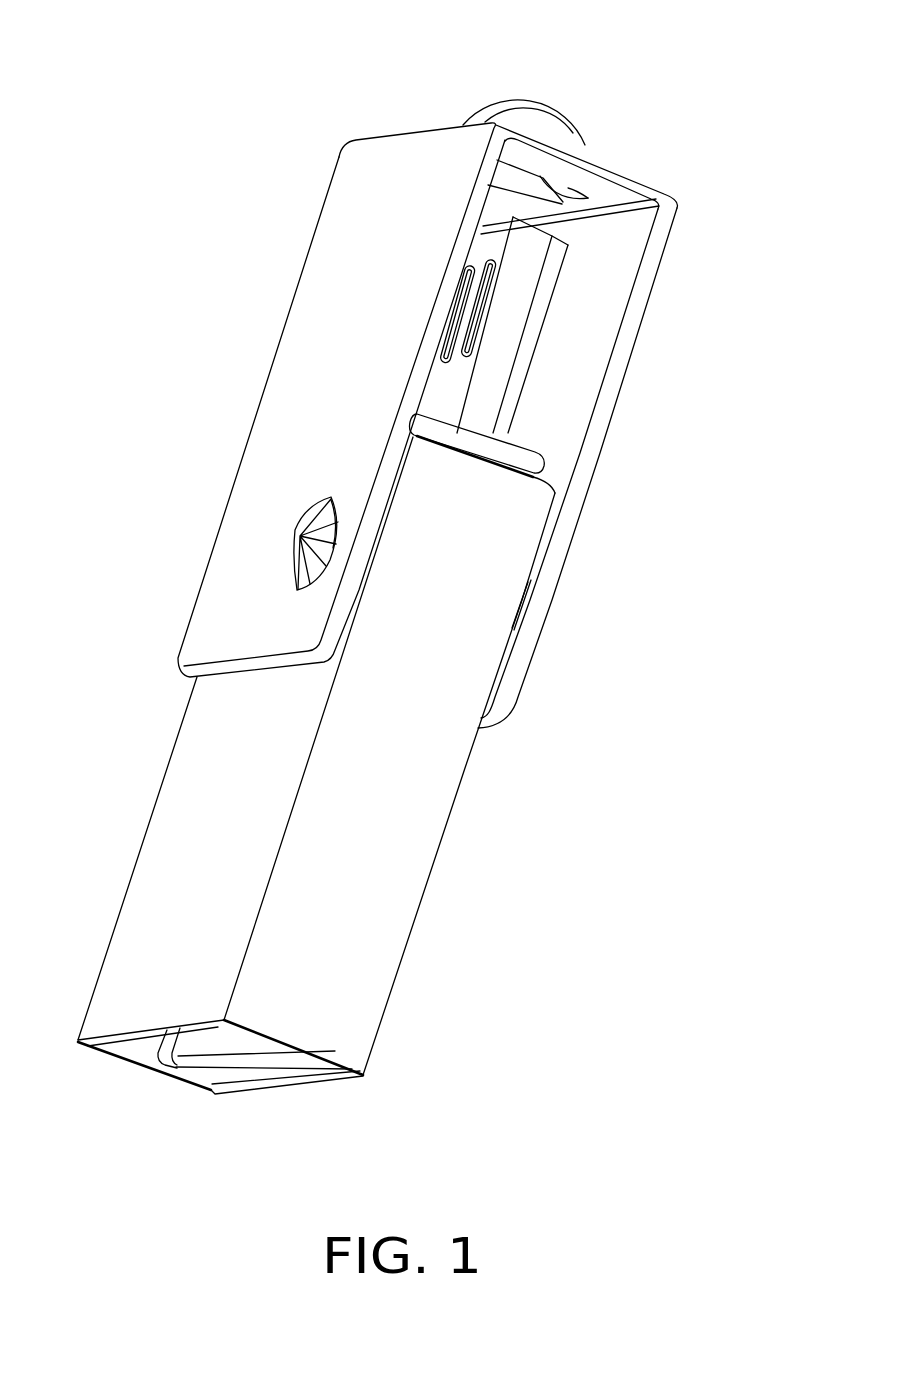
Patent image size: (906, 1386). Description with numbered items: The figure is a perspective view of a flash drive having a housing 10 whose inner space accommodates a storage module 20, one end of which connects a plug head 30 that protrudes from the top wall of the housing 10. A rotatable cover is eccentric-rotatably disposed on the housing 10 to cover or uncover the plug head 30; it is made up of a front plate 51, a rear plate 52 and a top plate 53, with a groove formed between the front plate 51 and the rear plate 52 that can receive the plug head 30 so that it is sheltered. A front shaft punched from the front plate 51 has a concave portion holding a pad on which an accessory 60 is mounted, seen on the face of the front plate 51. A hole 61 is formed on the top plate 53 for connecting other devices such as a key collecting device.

The housing 10 is at (387, 947).
The storage module 20 is at (213, 1037).
The plug head 30 is at (515, 308).
The front plate 51 is at (340, 263).
The rear plate 52 is at (648, 318).
The top plate 53 is at (615, 170).
The accessory 60 is at (300, 534).
The hole 61 is at (540, 127).